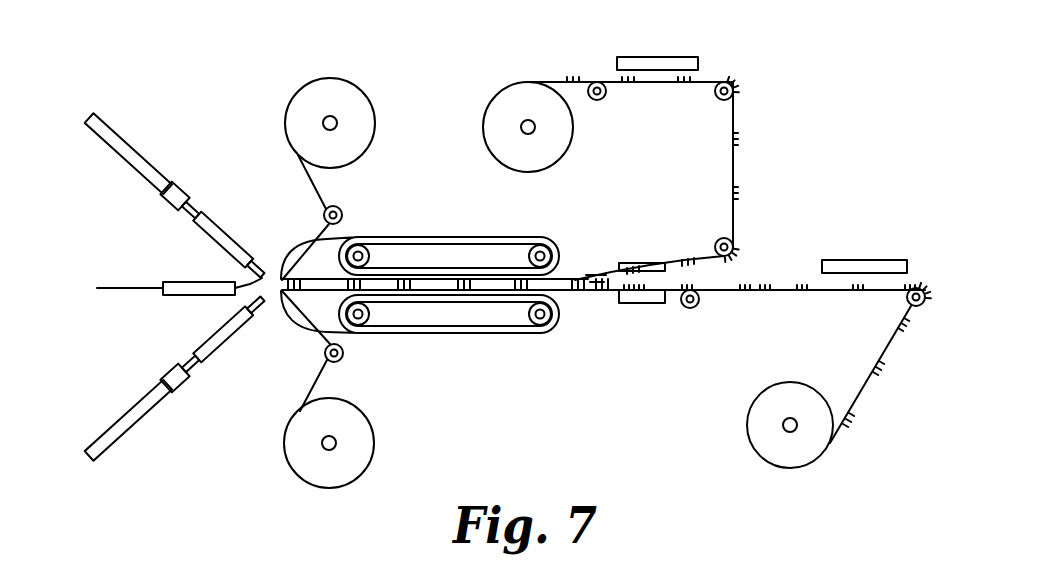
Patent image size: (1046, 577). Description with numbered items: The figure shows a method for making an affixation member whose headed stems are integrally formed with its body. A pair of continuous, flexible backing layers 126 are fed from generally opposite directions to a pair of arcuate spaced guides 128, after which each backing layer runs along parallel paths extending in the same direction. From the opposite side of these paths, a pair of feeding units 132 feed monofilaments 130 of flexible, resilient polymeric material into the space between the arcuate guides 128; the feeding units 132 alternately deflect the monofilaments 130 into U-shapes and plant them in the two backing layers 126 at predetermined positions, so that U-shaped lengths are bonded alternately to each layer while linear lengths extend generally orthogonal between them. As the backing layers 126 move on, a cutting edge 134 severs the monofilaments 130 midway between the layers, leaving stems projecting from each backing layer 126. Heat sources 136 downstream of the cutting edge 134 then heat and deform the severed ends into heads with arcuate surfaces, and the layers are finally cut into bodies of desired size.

The backing layers 126 is at (326, 187).
The arcuate spaced guides 128 is at (280, 272).
The monofilaments 130 is at (249, 280).
The feeding units 132 is at (212, 228).
The cutting edge 134 is at (598, 275).
The heat sources 136 is at (677, 58).